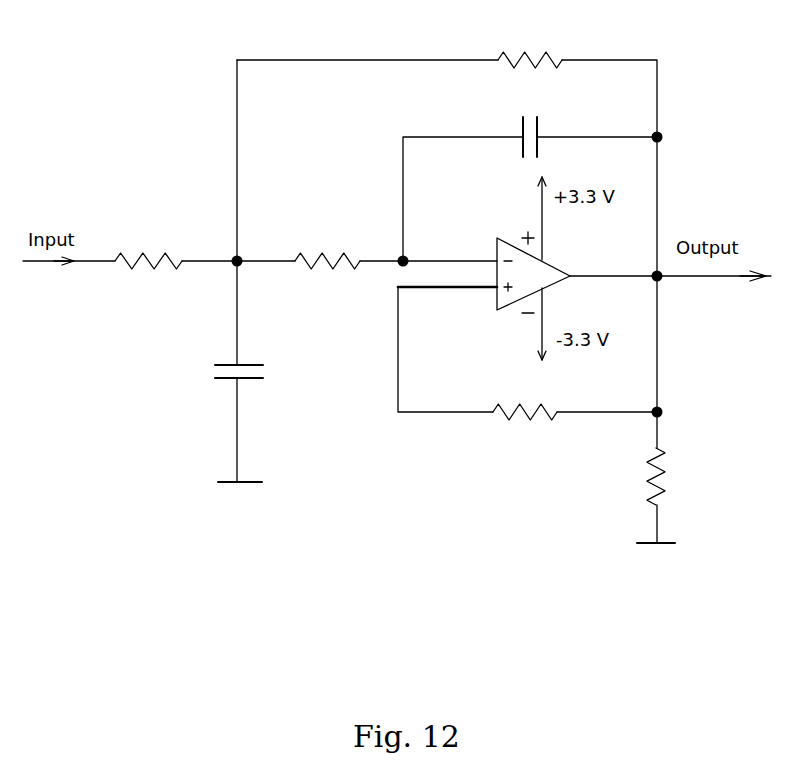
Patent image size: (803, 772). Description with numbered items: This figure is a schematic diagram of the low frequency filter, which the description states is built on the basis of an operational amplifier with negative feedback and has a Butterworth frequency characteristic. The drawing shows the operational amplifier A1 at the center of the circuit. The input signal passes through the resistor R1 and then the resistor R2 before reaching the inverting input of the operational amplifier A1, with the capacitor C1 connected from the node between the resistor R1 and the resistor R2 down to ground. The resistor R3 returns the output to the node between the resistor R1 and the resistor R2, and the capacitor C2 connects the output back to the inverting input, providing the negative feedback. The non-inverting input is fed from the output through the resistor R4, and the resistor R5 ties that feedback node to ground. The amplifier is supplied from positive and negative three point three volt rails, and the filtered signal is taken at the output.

The input resistor R1 is at (148, 249).
The series resistor R2 is at (327, 247).
The feedback resistor R3 is at (530, 46).
The feedback resistor to non-inverting input R4 is at (525, 398).
The resistor to ground R5 is at (673, 476).
The shunt capacitor C1 is at (256, 374).
The feedback capacitor C2 is at (526, 123).
The operational amplifier A1 is at (526, 268).